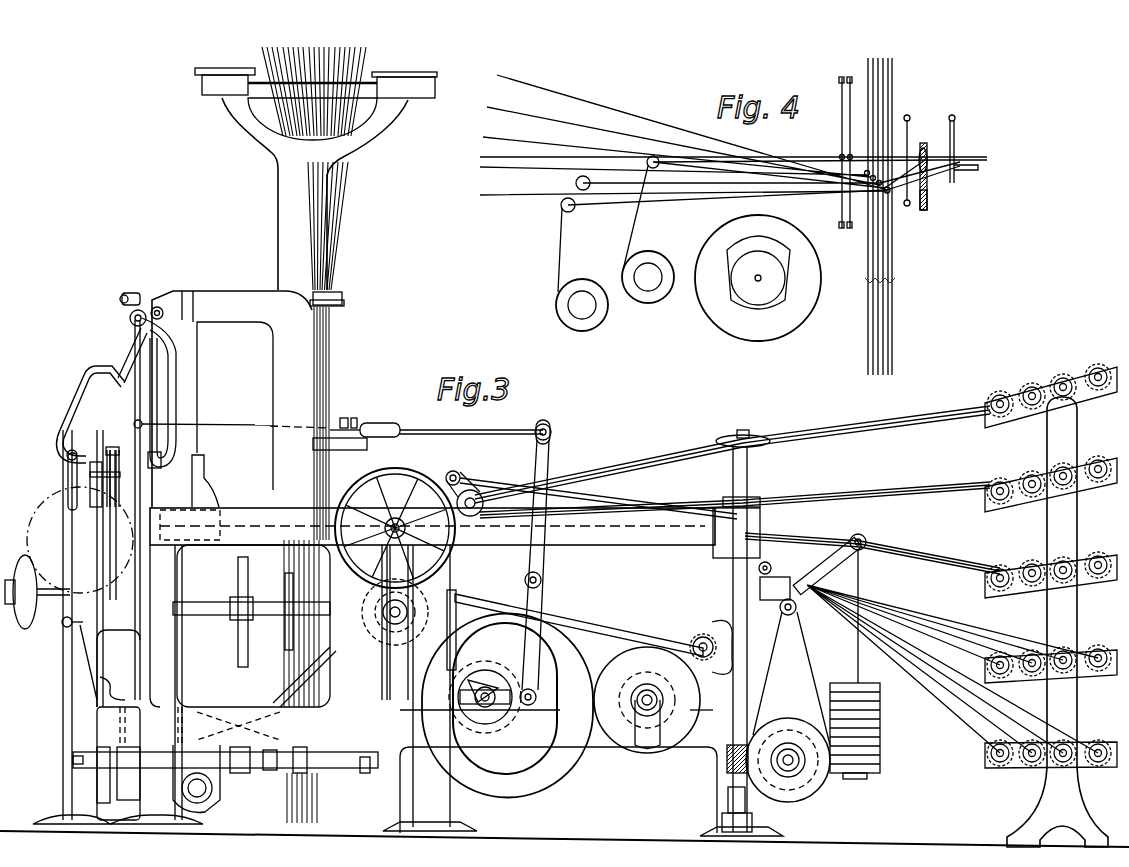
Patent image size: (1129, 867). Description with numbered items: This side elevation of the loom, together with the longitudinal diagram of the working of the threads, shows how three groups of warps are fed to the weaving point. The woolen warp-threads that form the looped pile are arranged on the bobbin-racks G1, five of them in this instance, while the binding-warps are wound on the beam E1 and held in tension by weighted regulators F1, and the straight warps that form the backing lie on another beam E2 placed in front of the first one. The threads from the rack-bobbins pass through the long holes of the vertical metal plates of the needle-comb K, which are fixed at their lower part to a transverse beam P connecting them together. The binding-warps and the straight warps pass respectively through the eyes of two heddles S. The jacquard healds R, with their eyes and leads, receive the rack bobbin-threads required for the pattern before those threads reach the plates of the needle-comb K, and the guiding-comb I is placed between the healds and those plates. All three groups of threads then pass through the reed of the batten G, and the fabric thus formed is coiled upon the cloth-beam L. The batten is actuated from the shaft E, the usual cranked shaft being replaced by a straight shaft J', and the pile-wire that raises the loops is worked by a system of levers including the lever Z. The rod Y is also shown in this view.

In FIG. 3, the jacquard healds R is at (316, 435).
In FIG. 4, the jacquard healds R is at (880, 216).
In FIG. 3, the cloth-beam L is at (69, 533).
In FIG. 3, the lever Z is at (147, 496).
In FIG. 3, the batten G is at (190, 497).
In FIG. 4, the batten G is at (963, 149).
In FIG. 3, the connecting rod Y is at (338, 425).
In FIG. 3, the straight shaft J' is at (423, 603).
In FIG. 3, the shaft E is at (507, 706).
In FIG. 3, the beam E1 is at (788, 707).
In FIG. 4, the beam E1 is at (583, 269).
In FIG. 3, the beam E2 is at (647, 700).
In FIG. 4, the beam E2 is at (654, 234).
In FIG. 3, the weighted regulators F1 is at (819, 656).
In FIG. 3, the bobbin-racks G1 is at (1051, 605).
In FIG. 4, the heddles S is at (845, 152).
In FIG. 4, the guiding-comb I is at (903, 160).
In FIG. 4, the needle-comb K is at (934, 174).
In FIG. 4, the transverse beam P is at (930, 205).